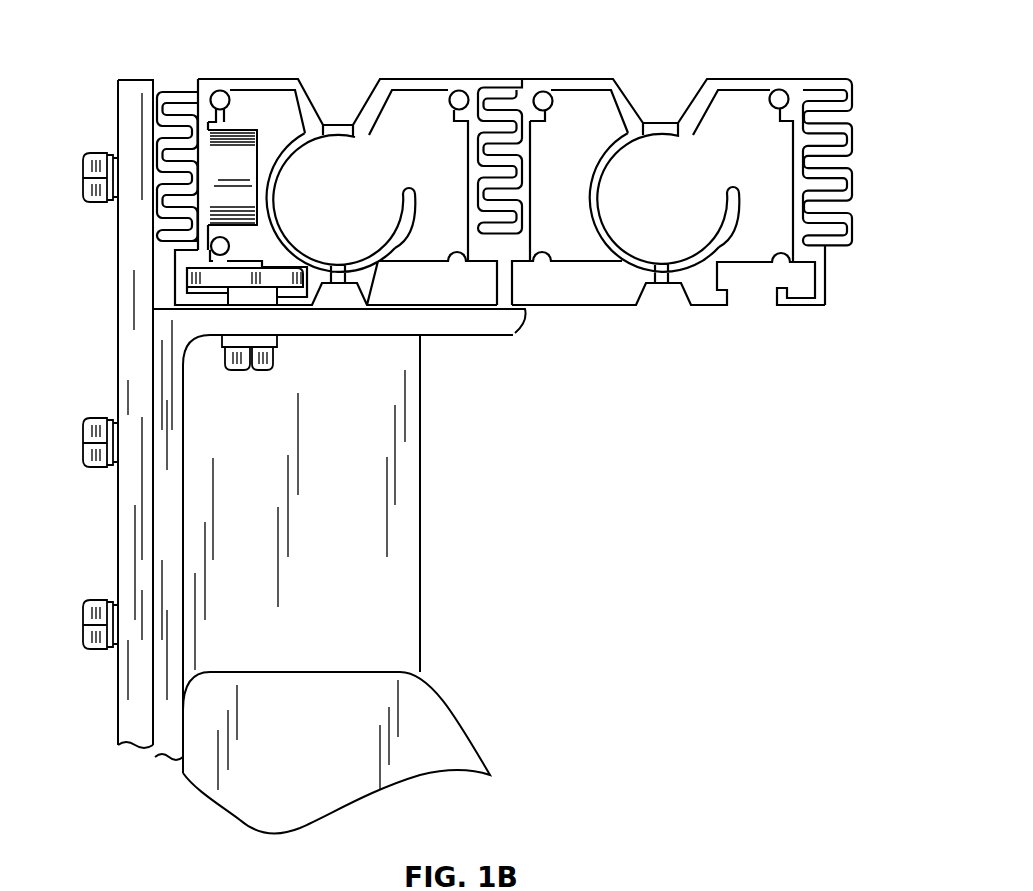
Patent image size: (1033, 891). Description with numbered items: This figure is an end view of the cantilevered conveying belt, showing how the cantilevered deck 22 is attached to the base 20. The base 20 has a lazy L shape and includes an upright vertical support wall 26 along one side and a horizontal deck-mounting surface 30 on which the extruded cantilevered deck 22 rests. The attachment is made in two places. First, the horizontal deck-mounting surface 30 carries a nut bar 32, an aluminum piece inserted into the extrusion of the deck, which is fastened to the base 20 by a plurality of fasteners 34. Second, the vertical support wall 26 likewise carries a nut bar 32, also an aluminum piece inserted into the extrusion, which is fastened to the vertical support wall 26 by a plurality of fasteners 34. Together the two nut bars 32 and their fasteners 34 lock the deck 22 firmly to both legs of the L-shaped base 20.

The base 20 is at (413, 484).
The cantilevered deck 22 is at (552, 78).
The vertical support wall 26 is at (134, 90).
The horizontal deck-mounting surface 30 is at (513, 333).
The nut bar 32 is at (253, 130).
The fasteners 34 is at (95, 153).